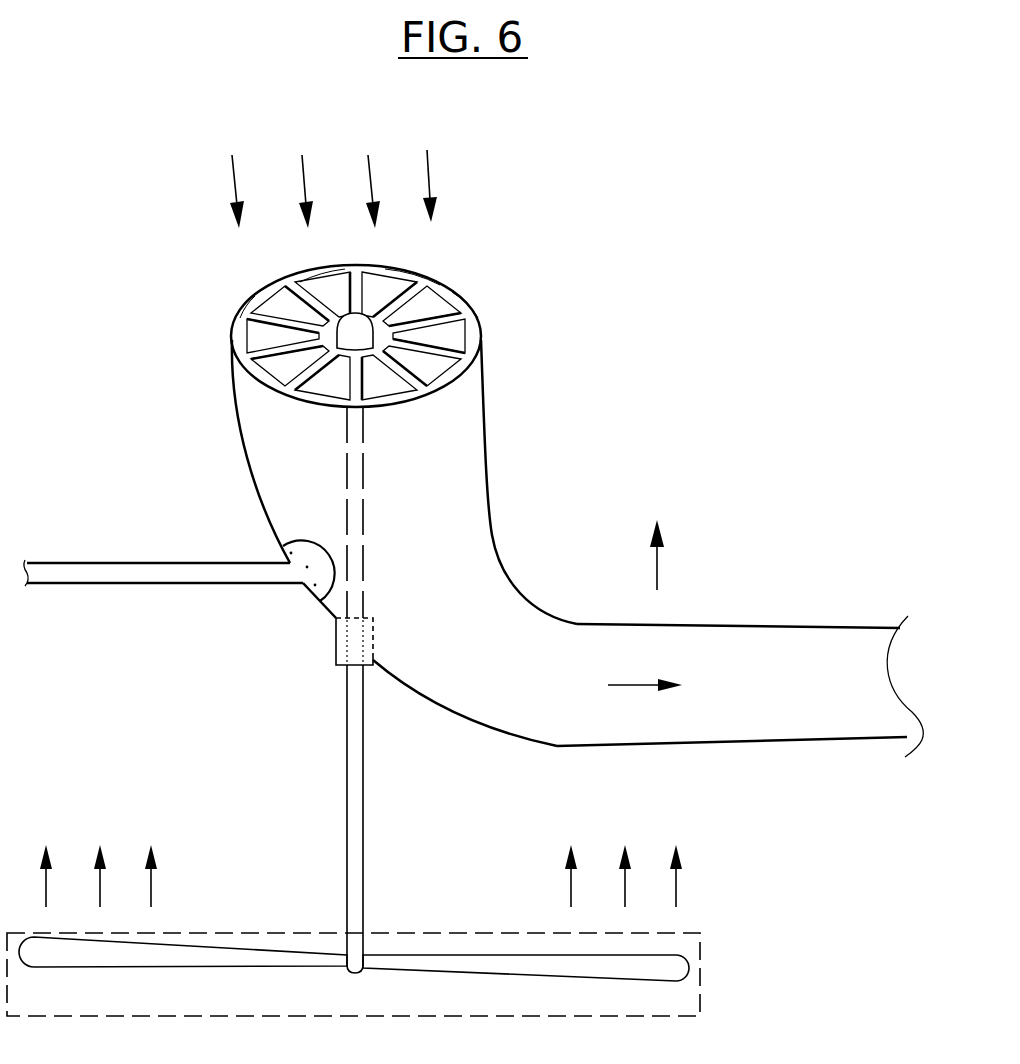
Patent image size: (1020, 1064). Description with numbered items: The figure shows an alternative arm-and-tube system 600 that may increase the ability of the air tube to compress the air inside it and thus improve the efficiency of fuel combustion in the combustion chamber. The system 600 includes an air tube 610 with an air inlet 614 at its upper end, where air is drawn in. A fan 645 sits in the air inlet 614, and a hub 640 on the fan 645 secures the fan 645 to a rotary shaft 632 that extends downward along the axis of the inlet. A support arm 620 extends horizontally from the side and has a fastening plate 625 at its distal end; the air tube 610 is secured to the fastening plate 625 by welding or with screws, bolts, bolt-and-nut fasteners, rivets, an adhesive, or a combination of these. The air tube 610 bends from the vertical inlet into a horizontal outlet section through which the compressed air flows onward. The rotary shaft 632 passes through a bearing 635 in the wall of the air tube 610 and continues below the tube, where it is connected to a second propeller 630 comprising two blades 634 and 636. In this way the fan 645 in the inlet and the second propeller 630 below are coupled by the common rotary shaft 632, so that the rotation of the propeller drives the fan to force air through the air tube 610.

The arm-and-tube system 600 is at (580, 193).
The air tube 610 is at (773, 624).
The air inlet 614 is at (242, 336).
The support arm 620 is at (105, 585).
The fastening plate 625 is at (285, 559).
The second propeller 630 is at (378, 1016).
The rotary shaft 632 is at (345, 850).
The blade 634 is at (138, 967).
The bearing 635 is at (333, 655).
The blade 636 is at (560, 977).
The hub 640 is at (357, 323).
The fan 645 is at (442, 356).